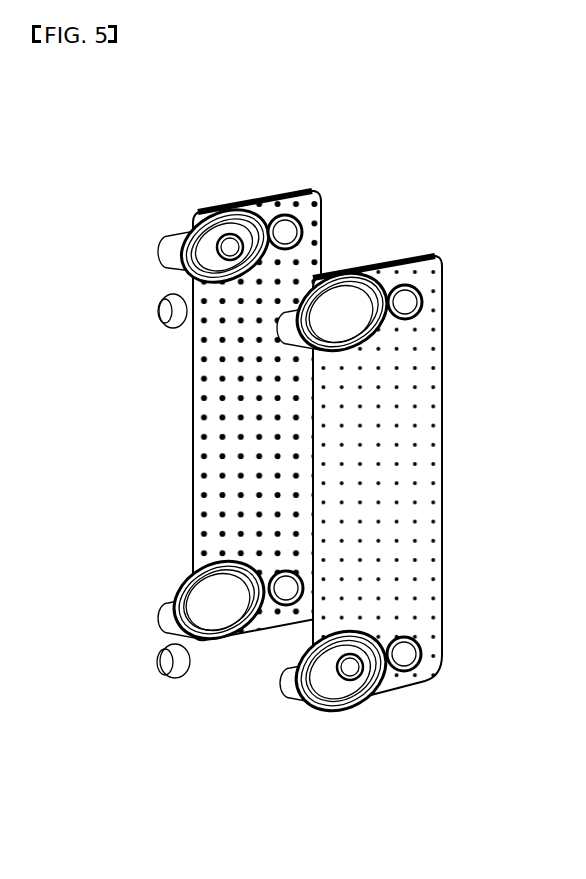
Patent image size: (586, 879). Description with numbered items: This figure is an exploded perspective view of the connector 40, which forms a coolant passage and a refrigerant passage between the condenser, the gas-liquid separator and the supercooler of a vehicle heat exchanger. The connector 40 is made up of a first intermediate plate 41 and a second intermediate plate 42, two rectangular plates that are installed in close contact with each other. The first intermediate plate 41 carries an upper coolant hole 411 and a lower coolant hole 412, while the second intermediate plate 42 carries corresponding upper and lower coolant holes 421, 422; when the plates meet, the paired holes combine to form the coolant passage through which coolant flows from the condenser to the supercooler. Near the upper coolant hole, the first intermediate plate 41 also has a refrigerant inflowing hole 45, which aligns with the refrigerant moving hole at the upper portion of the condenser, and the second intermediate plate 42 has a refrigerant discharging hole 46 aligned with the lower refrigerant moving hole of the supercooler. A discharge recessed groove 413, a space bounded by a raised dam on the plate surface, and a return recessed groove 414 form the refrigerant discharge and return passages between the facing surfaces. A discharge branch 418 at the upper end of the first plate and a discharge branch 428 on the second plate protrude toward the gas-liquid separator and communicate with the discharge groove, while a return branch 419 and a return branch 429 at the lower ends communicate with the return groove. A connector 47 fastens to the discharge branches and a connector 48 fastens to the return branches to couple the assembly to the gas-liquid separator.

The connector 40 is at (290, 440).
The first intermediate plate 41 is at (221, 437).
The second intermediate plate 42 is at (329, 487).
The coolant hole 411 is at (334, 224).
The coolant hole 412 is at (271, 641).
The discharge recessed groove 413 is at (215, 210).
The return recessed groove 414 is at (219, 642).
The discharge branch 418 is at (177, 245).
The return branch 419 is at (159, 600).
The coolant hole 421 is at (463, 299).
The coolant hole 422 is at (455, 674).
The discharge branch 428 is at (260, 317).
The return branch 429 is at (331, 699).
The refrigerant inflowing hole 45 is at (230, 194).
The refrigerant discharging hole 46 is at (341, 705).
The connector 47 is at (127, 313).
The connector 48 is at (172, 701).